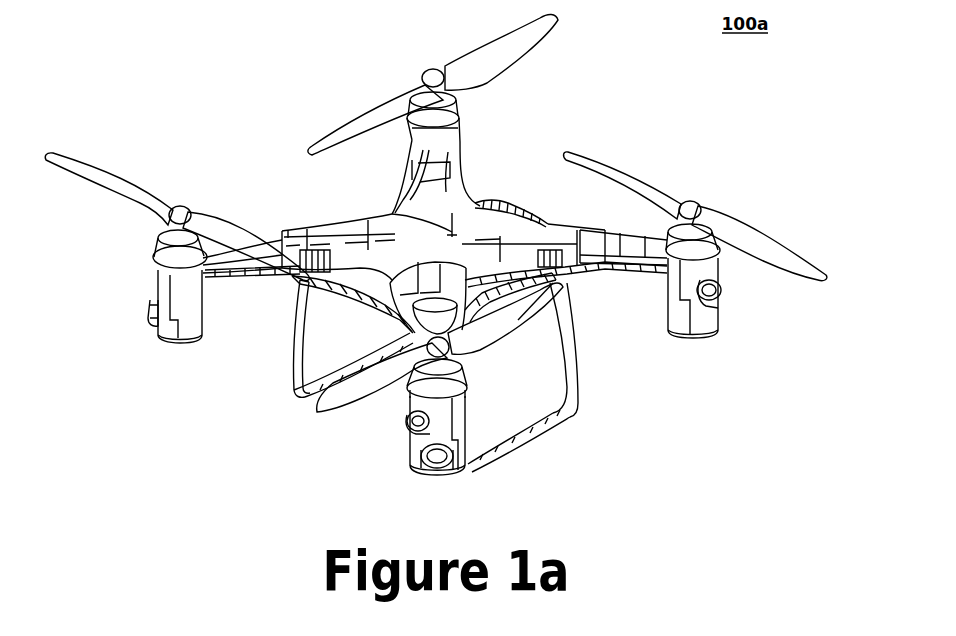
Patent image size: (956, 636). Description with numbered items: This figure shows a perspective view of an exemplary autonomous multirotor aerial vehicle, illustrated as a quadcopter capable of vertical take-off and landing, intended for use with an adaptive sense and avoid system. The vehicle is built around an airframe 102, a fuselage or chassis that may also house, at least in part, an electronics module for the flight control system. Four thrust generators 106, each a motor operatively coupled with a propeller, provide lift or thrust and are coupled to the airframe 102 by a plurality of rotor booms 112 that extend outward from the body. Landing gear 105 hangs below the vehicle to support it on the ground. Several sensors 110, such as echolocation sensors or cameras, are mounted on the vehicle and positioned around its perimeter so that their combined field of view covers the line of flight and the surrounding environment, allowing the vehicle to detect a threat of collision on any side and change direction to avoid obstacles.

The airframe 102 is at (472, 200).
The landing gear leg 105 is at (516, 440).
The thrust generator 106 is at (434, 70).
The sensor 110 is at (156, 318).
The rotor boom 112 is at (262, 280).